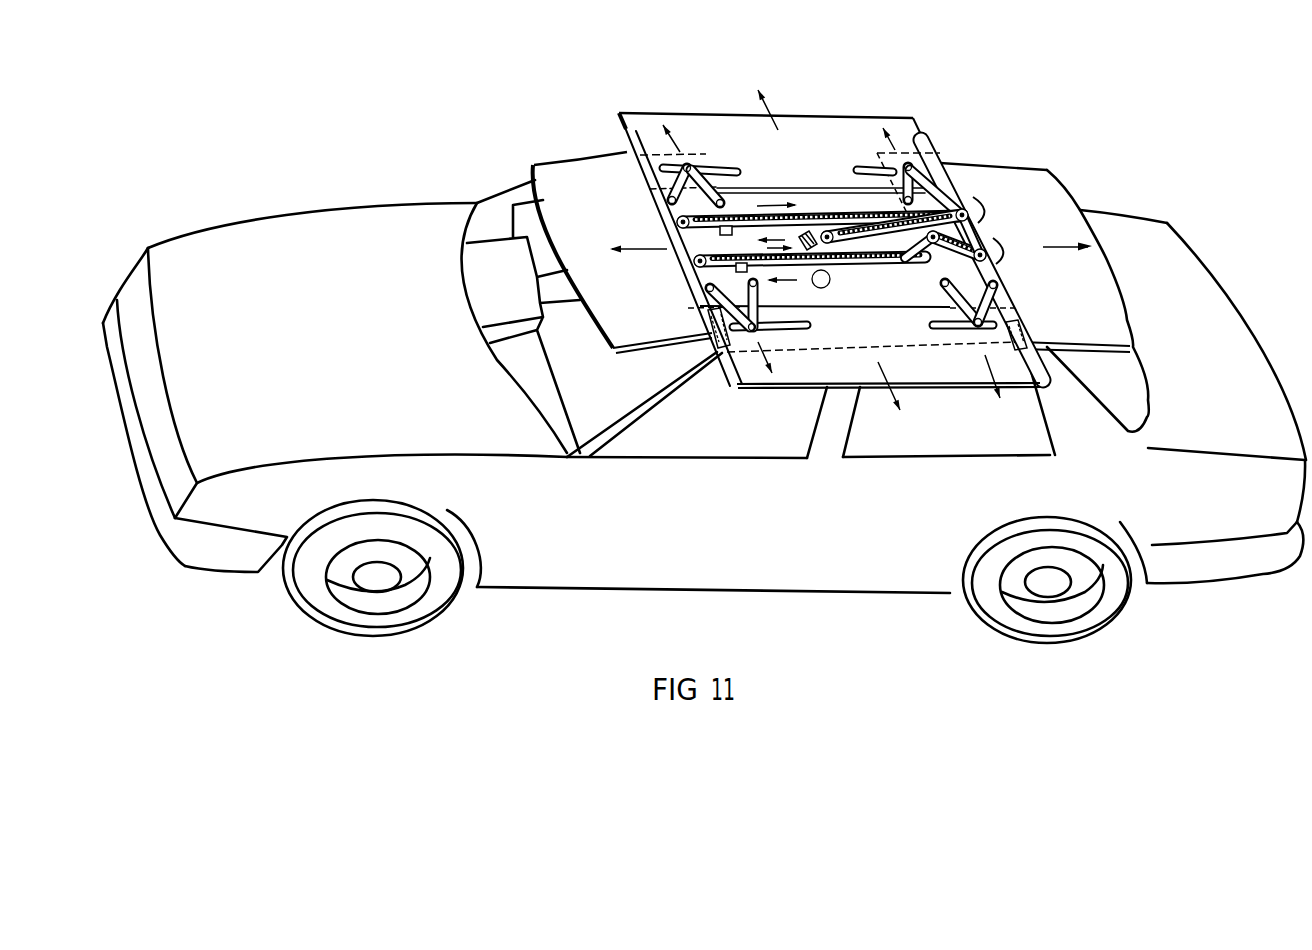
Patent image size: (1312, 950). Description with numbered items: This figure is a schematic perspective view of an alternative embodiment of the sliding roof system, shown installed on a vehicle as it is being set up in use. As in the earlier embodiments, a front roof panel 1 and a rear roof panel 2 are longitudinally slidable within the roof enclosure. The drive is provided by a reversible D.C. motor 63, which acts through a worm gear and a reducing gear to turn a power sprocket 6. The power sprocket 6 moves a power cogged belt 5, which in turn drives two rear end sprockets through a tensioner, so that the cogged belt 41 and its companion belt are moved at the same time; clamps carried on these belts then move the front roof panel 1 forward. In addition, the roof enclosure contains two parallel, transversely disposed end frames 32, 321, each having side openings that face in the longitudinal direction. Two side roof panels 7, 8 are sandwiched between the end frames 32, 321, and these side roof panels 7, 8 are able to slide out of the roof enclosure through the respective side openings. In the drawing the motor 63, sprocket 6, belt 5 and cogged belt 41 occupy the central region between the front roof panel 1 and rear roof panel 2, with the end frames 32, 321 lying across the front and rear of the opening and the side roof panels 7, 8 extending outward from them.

The front roof panel 1 is at (558, 178).
The rear roof panel 2 is at (1032, 186).
The power cogged belt 5 is at (873, 212).
The power sprocket 6 is at (829, 231).
The side roof panel 7 is at (805, 128).
The side roof panel 8 is at (807, 372).
The end frame 32 is at (720, 349).
The cogged belt 41 is at (698, 216).
The reversible D.C. motor 63 is at (823, 288).
The end frame 321 is at (1013, 351).